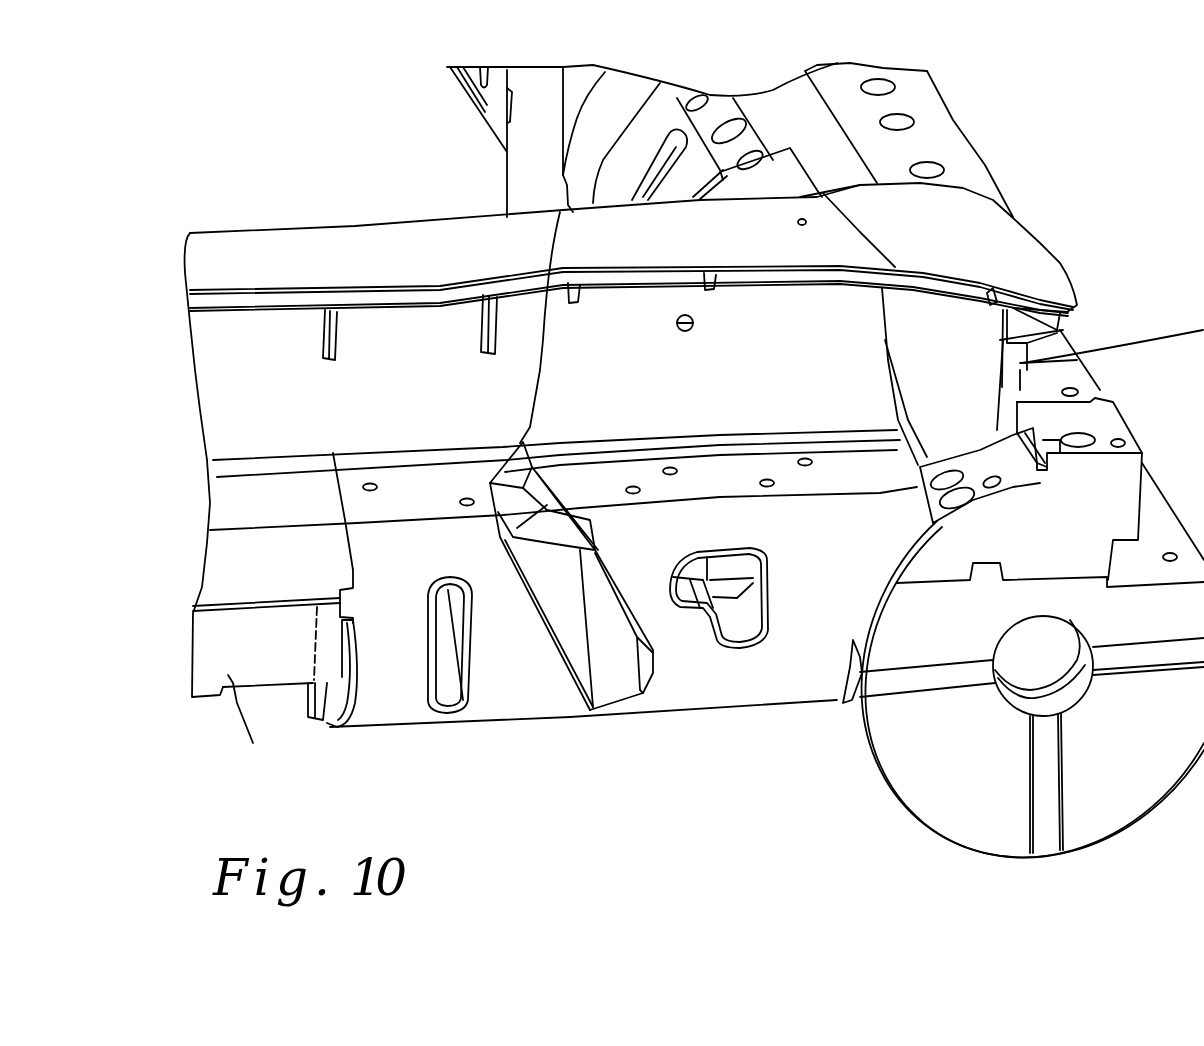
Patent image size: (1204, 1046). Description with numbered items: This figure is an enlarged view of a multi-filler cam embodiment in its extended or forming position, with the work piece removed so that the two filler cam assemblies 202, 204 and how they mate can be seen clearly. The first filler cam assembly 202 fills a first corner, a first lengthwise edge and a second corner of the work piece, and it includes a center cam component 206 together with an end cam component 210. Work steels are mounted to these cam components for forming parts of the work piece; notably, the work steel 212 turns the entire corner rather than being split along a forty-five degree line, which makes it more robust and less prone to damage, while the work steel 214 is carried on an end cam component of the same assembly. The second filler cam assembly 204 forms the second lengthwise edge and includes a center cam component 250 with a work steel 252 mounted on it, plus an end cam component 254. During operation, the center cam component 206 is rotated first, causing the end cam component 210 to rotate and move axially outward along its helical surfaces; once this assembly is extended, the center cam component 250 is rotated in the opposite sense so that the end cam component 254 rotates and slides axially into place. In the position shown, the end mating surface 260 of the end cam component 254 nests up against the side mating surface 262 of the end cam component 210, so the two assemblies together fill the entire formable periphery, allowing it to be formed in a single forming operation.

The filler cam assembly 202 is at (1104, 149).
The filler cam assembly 204 is at (477, 736).
The center cam component 206 is at (1080, 375).
The end cam component 210 is at (940, 806).
The work steel 212 is at (1057, 262).
The work steel 214 is at (940, 132).
The center cam component 250 is at (370, 724).
The work steel 252 is at (347, 232).
The end cam component 254 is at (727, 690).
The end mating surface 260 is at (857, 707).
The side mating surface 262 is at (868, 700).